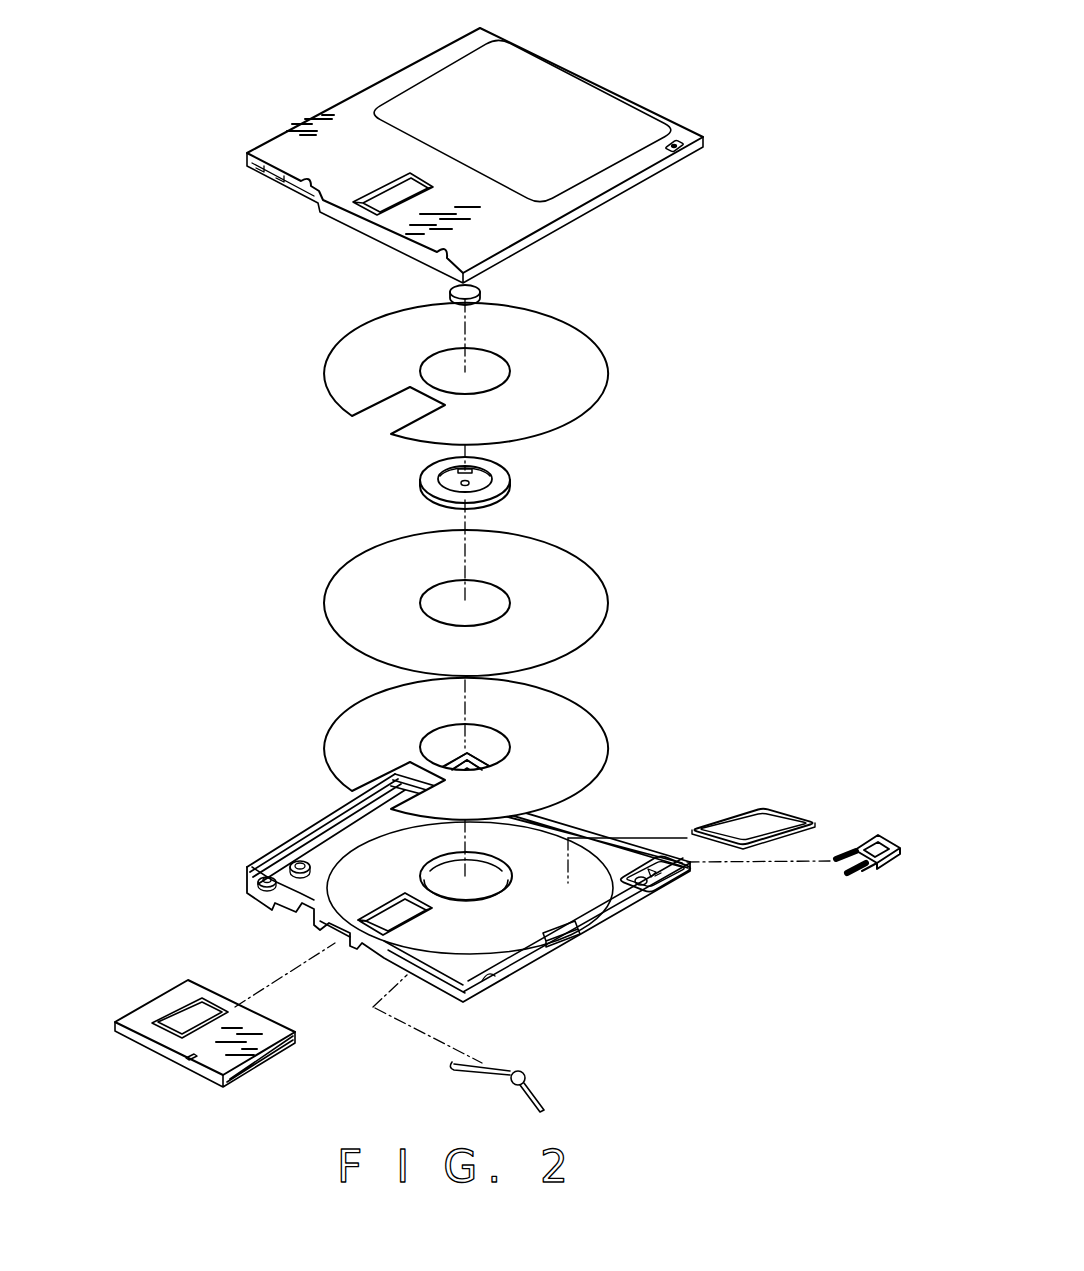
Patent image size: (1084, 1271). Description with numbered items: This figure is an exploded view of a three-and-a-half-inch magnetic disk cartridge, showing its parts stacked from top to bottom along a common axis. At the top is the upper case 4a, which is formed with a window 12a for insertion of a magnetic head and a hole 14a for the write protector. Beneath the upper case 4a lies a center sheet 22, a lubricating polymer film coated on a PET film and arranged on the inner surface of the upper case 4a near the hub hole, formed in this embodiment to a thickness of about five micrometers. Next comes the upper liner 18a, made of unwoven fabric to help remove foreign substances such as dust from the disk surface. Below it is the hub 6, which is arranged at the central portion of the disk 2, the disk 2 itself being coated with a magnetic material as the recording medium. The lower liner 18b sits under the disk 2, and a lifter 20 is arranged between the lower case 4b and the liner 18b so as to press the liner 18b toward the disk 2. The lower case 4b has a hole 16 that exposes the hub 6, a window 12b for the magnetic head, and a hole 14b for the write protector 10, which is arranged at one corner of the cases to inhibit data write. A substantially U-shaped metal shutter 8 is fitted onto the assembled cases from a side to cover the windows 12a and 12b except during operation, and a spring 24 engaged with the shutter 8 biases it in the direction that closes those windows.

The upper case 4a is at (578, 95).
The window 12a is at (378, 202).
The hole 14a is at (678, 138).
The center sheet 22 is at (482, 289).
The liner 18a is at (580, 387).
The hub 6 is at (500, 475).
The disk 2 is at (575, 587).
The liner 18b is at (587, 727).
The lower case 4b is at (607, 823).
The hole 16 is at (497, 880).
The window 12b is at (363, 937).
The hole 14b is at (658, 877).
The lifter 20 is at (768, 812).
The write protector 10 is at (866, 836).
The shutter 8 is at (283, 1060).
The spring 24 is at (540, 1078).